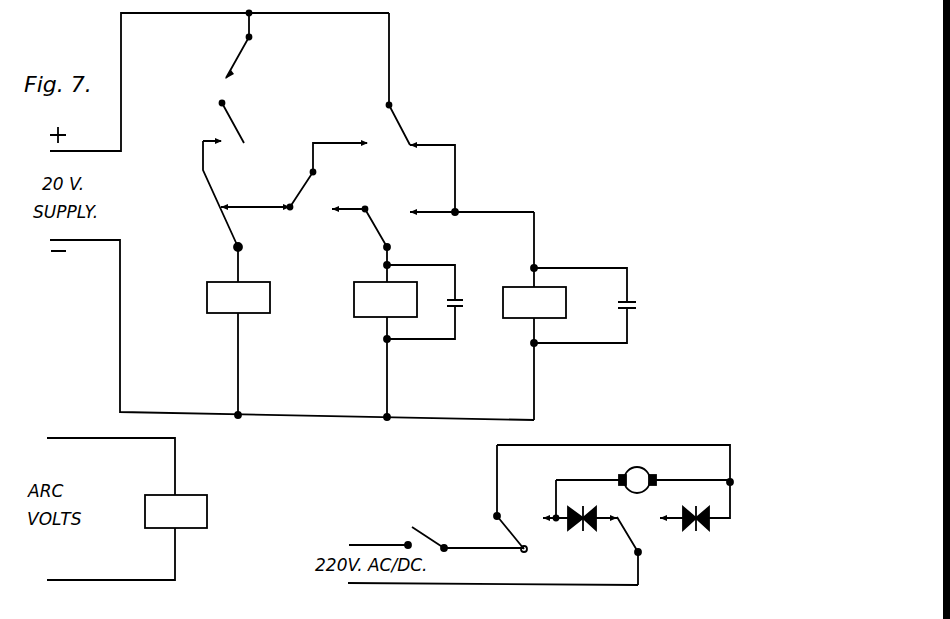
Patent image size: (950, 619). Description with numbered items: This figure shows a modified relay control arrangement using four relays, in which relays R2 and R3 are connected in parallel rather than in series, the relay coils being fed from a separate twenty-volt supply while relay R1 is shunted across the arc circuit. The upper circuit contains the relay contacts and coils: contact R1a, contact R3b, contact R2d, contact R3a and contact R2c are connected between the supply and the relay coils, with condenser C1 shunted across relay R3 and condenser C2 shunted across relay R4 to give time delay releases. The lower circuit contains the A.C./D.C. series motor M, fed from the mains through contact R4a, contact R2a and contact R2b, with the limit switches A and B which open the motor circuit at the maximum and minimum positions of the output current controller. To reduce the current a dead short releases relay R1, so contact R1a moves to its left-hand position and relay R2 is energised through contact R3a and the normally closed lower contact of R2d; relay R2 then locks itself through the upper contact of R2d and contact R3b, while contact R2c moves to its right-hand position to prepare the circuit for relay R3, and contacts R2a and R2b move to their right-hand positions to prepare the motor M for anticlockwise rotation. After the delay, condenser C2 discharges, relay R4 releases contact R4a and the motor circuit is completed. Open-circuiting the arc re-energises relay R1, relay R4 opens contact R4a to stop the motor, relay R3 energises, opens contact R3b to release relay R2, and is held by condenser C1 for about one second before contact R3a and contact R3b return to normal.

The contact R3b is at (246, 46).
The contact R2d is at (235, 174).
The contact R1a is at (421, 112).
The contact R3a is at (294, 189).
The contact R2c is at (379, 235).
The condenser C1 is at (432, 302).
The condenser C2 is at (585, 305).
The contact R4a is at (436, 528).
The contact R2a is at (603, 498).
The contact R2b is at (644, 551).
The limit switch A is at (580, 510).
The limit switch B is at (695, 510).
The A.C./D.C. series motor M is at (643, 492).